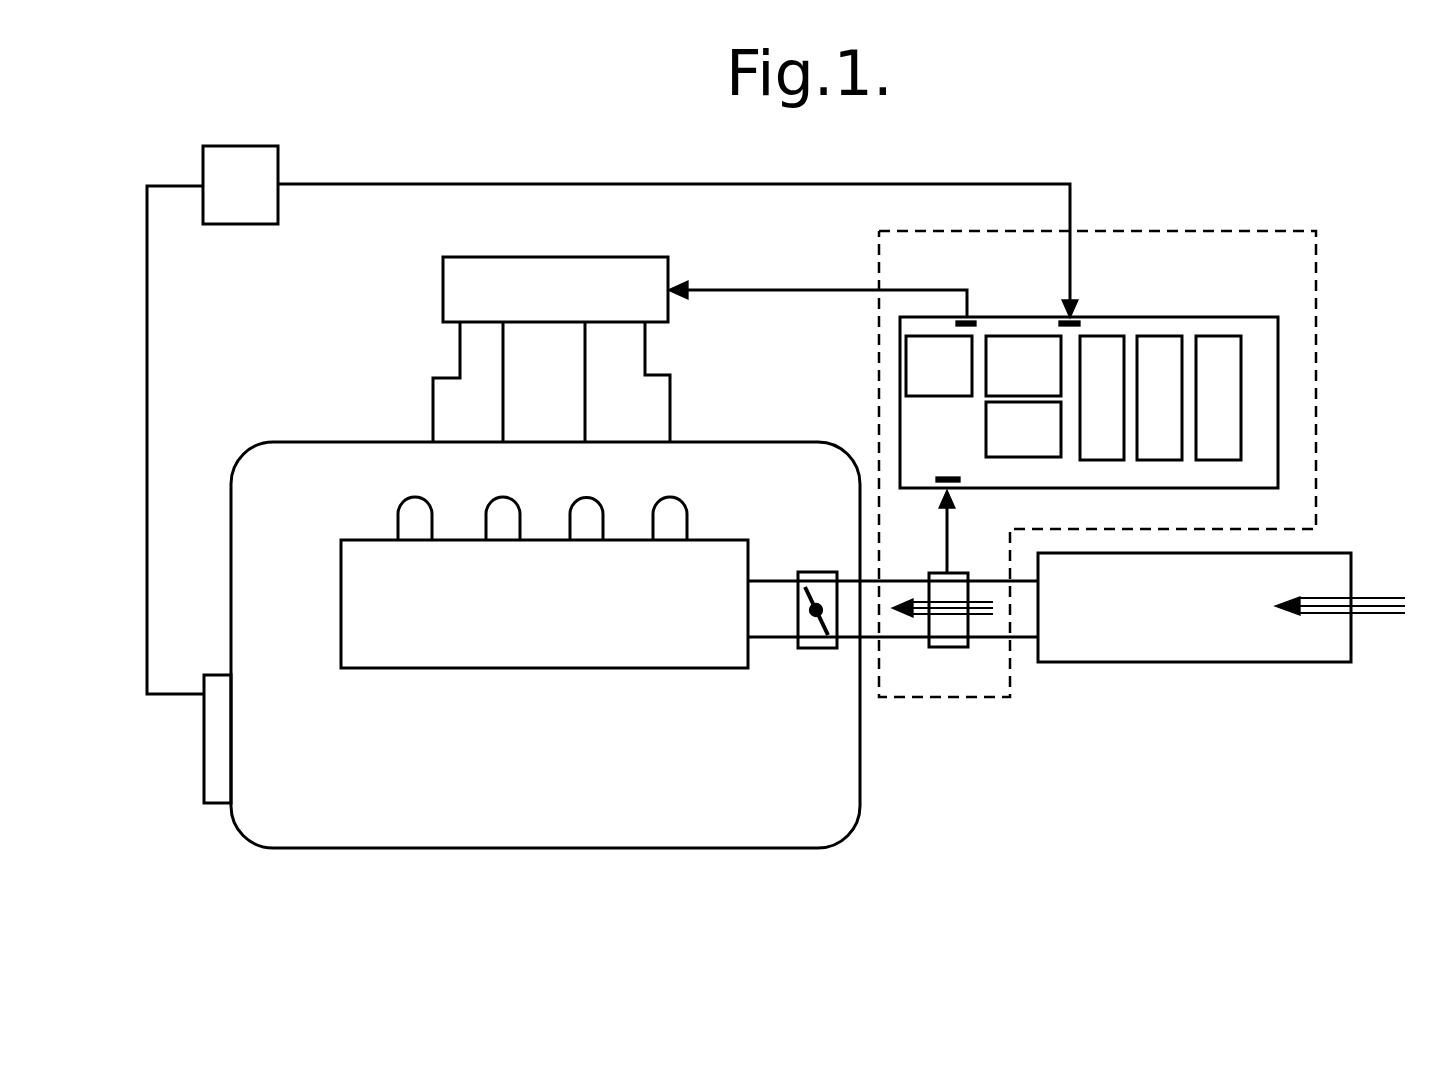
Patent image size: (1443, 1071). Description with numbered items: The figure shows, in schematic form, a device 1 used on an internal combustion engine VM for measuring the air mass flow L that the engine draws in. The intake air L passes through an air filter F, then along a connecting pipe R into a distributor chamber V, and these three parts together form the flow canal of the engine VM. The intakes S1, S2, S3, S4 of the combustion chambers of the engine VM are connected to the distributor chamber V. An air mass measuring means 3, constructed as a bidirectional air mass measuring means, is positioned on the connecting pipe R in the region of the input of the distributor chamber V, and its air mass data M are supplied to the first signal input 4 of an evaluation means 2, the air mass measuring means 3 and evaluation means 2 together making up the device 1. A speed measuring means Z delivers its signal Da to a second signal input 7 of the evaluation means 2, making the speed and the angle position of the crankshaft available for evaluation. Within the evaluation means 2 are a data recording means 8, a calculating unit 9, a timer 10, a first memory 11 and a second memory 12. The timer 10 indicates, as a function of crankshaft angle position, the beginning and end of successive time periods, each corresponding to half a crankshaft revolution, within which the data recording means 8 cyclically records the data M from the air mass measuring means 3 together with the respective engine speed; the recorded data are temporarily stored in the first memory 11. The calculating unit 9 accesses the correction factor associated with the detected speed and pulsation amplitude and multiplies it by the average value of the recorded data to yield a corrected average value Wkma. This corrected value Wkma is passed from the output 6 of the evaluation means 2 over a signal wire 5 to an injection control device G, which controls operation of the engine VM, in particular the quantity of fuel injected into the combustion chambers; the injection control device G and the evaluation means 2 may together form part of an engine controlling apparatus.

The device 1 is at (1278, 231).
The evaluation means 2 is at (1263, 426).
The air mass measuring means 3 is at (947, 640).
The first signal input 4 is at (938, 485).
The signal wire 5 is at (922, 290).
The output 6 is at (977, 319).
The second signal input 7 is at (1081, 319).
The data recording means 8 is at (1035, 443).
The calculating unit 9 is at (1035, 381).
The timer 10 is at (957, 382).
The first memory 11 is at (1148, 345).
The second memory 12 is at (1210, 345).
The speed measuring means Z is at (253, 162).
The speed signal Da is at (678, 225).
The injection control device G is at (473, 290).
The corrected average value Wkma is at (817, 280).
The internal combustion engine VM is at (279, 801).
The distributor chamber V is at (583, 649).
The intake S1 is at (415, 514).
The intake S2 is at (503, 513).
The intake S3 is at (583, 513).
The intake S4 is at (666, 512).
The connecting pipe R is at (870, 627).
The air mass data M is at (974, 531).
The air filter F is at (1265, 647).
The air mass flow L is at (1380, 613).